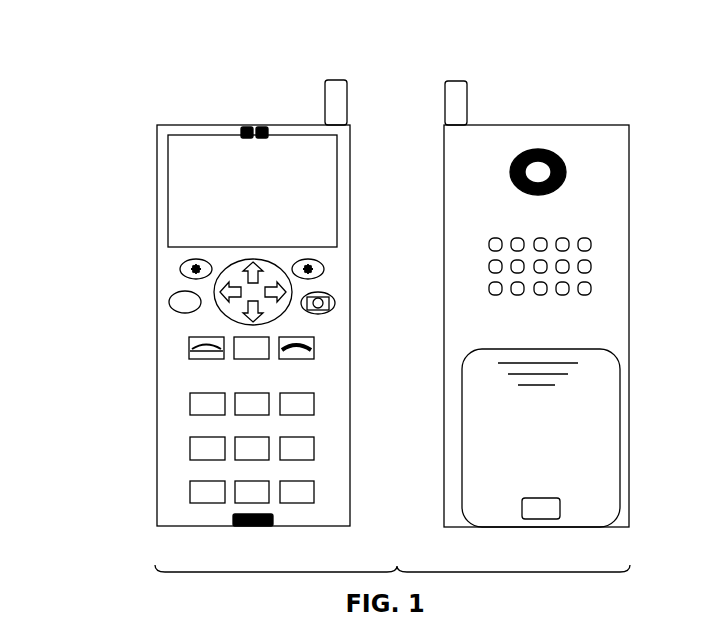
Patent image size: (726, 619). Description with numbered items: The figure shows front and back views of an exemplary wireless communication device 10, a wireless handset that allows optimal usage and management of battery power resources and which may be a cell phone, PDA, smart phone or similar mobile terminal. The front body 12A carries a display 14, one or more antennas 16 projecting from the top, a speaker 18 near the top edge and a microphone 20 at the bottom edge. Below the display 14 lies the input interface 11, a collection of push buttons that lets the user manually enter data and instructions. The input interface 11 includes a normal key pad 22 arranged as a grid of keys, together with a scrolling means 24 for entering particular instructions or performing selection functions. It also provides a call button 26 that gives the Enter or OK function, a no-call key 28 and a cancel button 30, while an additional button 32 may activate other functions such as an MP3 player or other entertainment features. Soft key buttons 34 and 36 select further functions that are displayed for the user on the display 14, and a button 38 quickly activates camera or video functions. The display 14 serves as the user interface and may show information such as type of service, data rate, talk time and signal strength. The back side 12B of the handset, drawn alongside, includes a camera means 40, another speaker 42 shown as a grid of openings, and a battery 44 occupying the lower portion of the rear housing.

The wireless communication device 10 is at (199, 59).
The input interface 11 is at (72, 258).
The front body 12A is at (180, 125).
The back side 12B is at (548, 125).
The display 14 is at (337, 178).
The antenna 16 is at (349, 115).
The speaker 18 is at (256, 127).
The microphone 20 is at (248, 527).
The key pad 22 is at (325, 392).
The scrolling means 24 is at (291, 289).
The call button 26 is at (190, 348).
The no-call key 28 is at (314, 343).
The cancel button 30 is at (252, 359).
The additional button 32 is at (168, 302).
The soft key button 34 is at (179, 270).
The soft key button 36 is at (325, 271).
The button 38 is at (336, 305).
The camera means 40 is at (563, 165).
The speaker 42 is at (595, 263).
The battery 44 is at (628, 368).